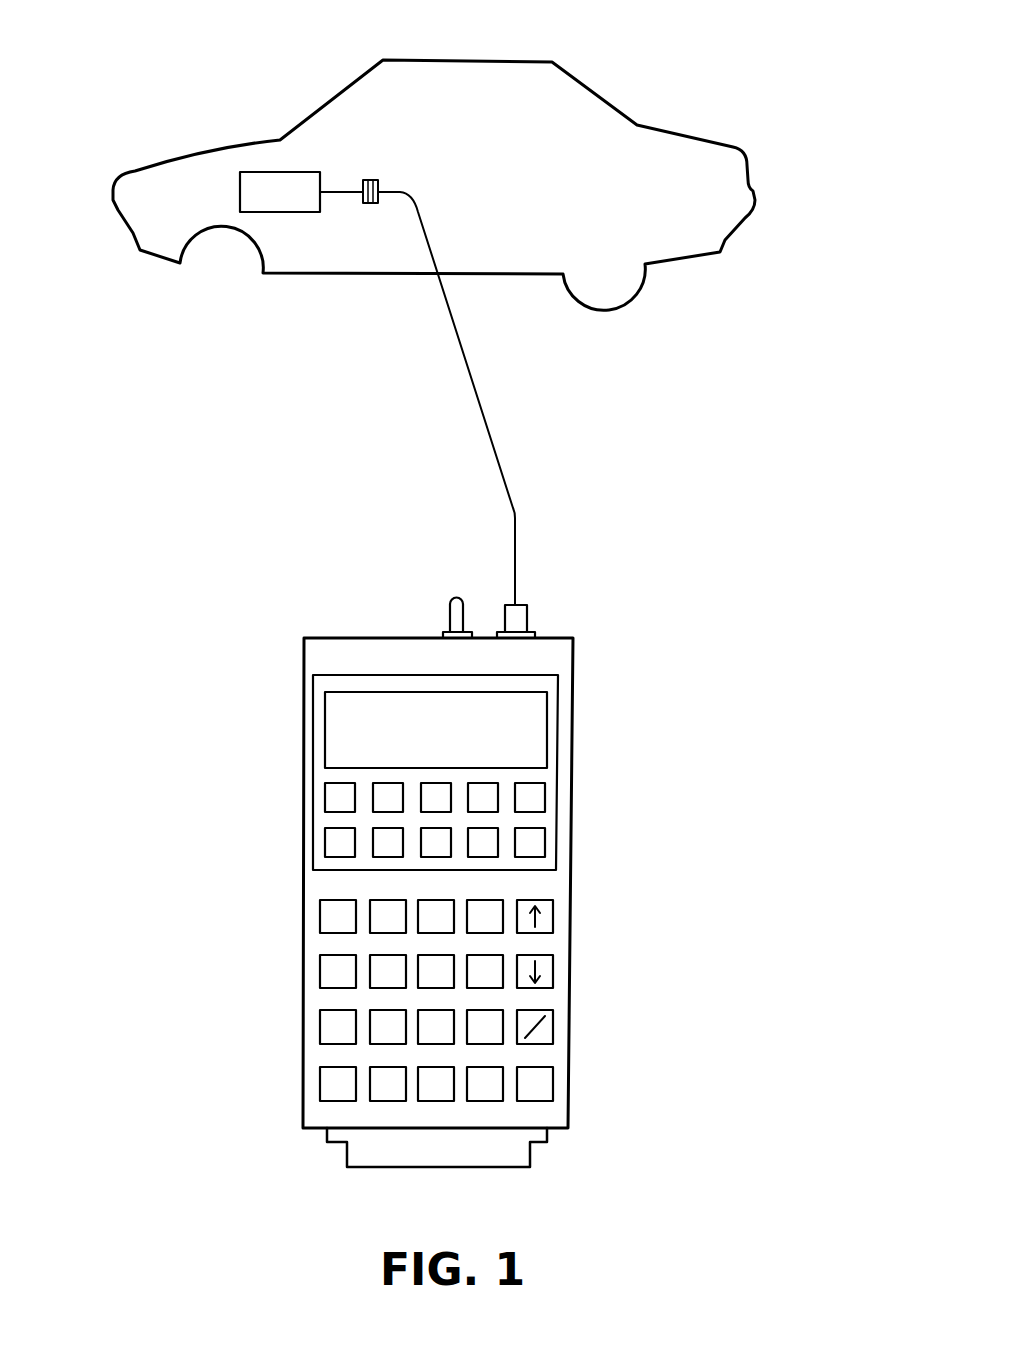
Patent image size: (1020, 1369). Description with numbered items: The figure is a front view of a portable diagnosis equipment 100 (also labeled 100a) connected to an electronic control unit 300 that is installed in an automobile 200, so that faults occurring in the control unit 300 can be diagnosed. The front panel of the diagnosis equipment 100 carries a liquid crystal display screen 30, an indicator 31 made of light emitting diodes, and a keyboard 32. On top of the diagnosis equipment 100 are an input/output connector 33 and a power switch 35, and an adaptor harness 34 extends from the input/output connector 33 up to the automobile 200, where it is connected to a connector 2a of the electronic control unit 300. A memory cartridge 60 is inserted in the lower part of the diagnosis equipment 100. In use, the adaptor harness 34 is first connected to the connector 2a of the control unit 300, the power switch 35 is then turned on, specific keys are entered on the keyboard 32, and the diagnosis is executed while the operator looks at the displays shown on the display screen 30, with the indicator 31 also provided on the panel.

The automobile 200 is at (578, 62).
The electronic control unit 300 is at (262, 213).
The connector 2a is at (378, 180).
The adaptor harness 34 is at (482, 408).
The power switch 35 is at (448, 614).
The input/output connector 33 is at (530, 622).
The portable diagnosis equipment 100 is at (542, 883).
The diagnostic tester 100a is at (584, 682).
The liquid crystal display screen 30 is at (547, 738).
The indicator of light emitting diodes 31 is at (583, 775).
The keyboard 32 is at (585, 895).
The memory cartridge 60 is at (345, 1153).